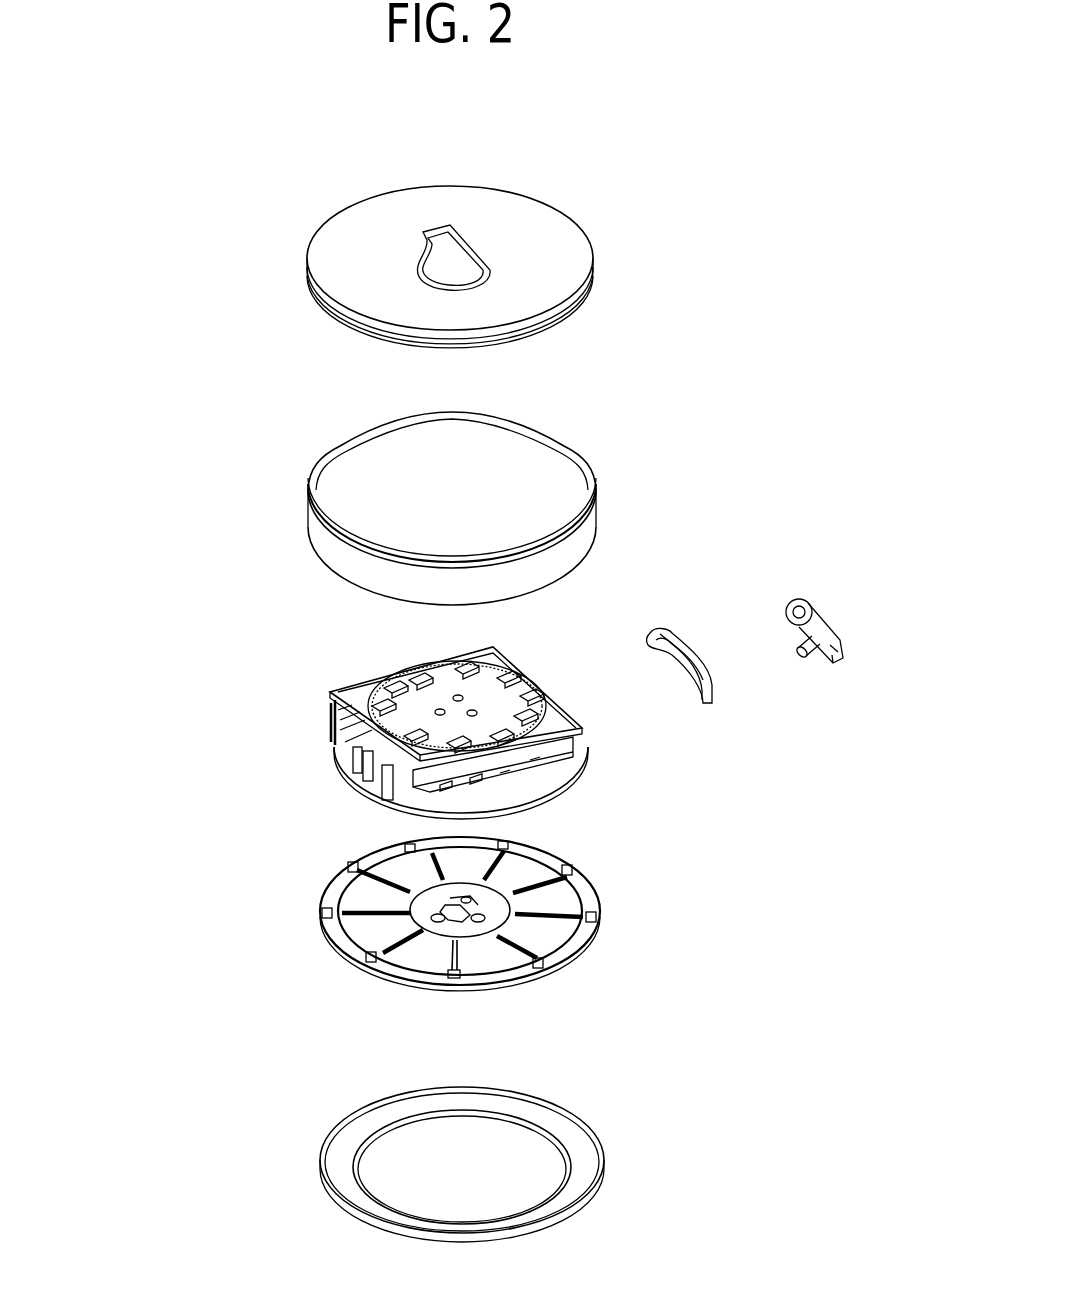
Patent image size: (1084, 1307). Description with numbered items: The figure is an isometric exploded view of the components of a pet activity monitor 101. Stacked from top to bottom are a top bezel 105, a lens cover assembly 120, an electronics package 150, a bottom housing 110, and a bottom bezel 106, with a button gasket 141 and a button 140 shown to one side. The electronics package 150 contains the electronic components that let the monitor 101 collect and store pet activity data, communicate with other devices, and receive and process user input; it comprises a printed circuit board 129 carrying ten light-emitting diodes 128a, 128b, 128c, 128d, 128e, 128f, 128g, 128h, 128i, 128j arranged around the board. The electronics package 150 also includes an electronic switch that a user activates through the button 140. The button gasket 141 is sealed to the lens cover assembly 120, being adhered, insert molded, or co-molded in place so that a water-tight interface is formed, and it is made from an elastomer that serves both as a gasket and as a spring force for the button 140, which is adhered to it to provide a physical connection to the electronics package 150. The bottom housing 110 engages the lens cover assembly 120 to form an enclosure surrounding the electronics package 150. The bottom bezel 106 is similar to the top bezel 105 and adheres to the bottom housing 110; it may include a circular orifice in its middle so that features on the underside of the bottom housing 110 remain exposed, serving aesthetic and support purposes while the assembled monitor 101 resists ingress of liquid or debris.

The monitor 101 is at (673, 228).
The top bezel 105 is at (567, 318).
The lens cover assembly 120 is at (336, 453).
The electronics package 150 is at (330, 690).
The light emitting diode 128a is at (423, 674).
The light emitting diode 128b is at (466, 668).
The light emitting diode 128c is at (510, 678).
The light emitting diode 128d is at (536, 700).
The light emitting diode 128e is at (536, 716).
The light emitting diode 128f is at (512, 740).
The light emitting diode 128g is at (455, 749).
The light emitting diode 128h is at (410, 742).
The light emitting diode 128i is at (378, 710).
The light emitting diode 128j is at (392, 686).
The printed circuit board 129 is at (537, 792).
The button gasket 141 is at (665, 628).
The button 140 is at (813, 603).
The bottom housing 110 is at (566, 960).
The bottom bezel 106 is at (604, 1172).